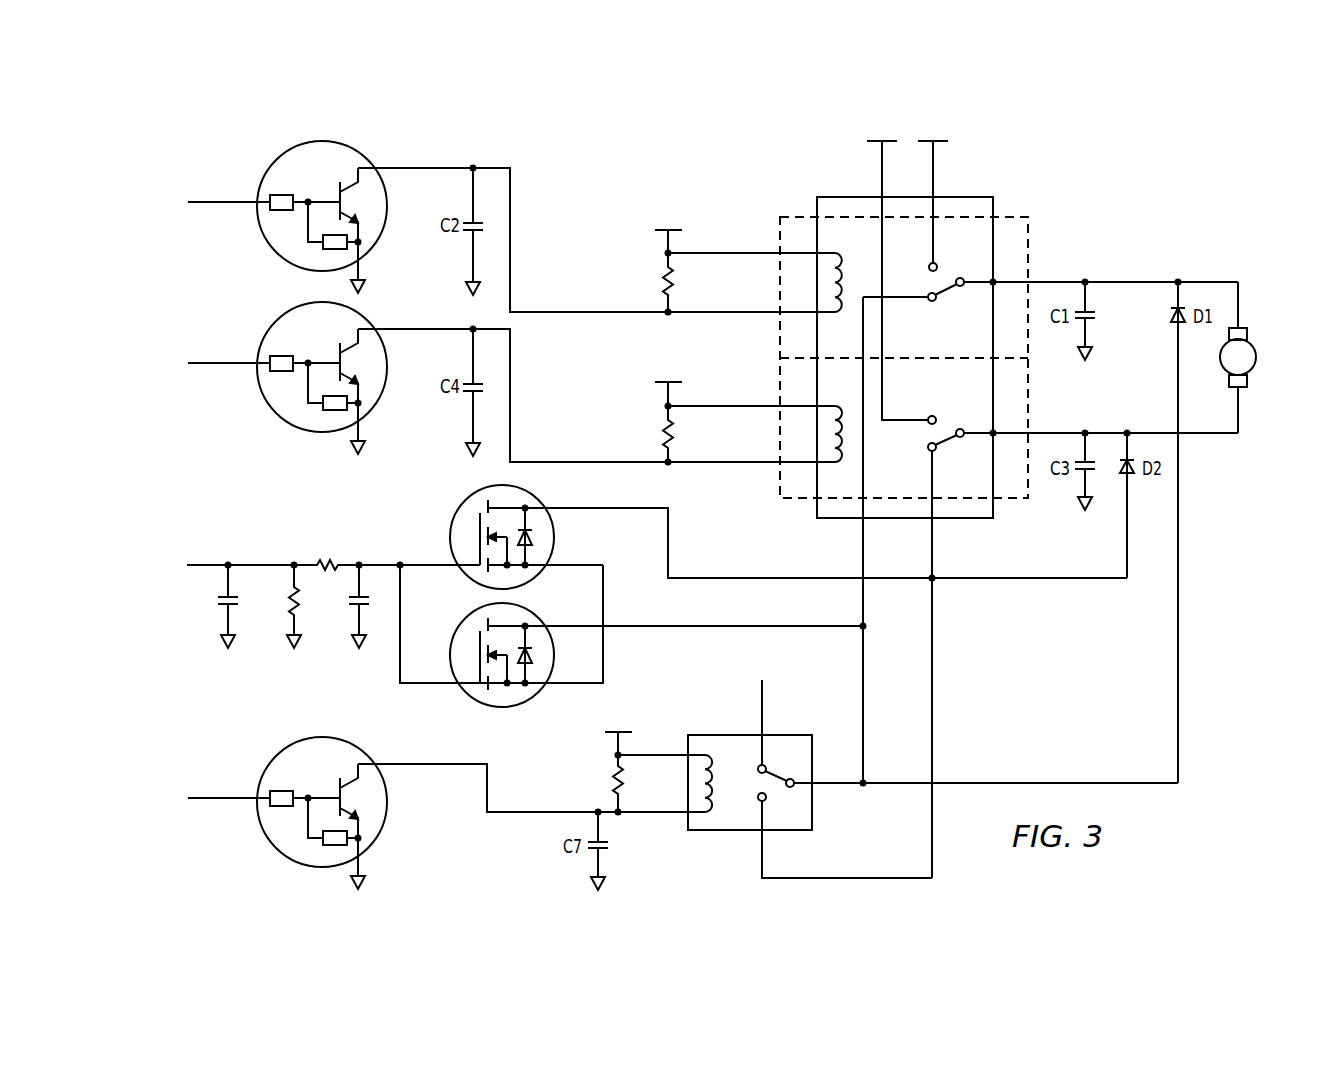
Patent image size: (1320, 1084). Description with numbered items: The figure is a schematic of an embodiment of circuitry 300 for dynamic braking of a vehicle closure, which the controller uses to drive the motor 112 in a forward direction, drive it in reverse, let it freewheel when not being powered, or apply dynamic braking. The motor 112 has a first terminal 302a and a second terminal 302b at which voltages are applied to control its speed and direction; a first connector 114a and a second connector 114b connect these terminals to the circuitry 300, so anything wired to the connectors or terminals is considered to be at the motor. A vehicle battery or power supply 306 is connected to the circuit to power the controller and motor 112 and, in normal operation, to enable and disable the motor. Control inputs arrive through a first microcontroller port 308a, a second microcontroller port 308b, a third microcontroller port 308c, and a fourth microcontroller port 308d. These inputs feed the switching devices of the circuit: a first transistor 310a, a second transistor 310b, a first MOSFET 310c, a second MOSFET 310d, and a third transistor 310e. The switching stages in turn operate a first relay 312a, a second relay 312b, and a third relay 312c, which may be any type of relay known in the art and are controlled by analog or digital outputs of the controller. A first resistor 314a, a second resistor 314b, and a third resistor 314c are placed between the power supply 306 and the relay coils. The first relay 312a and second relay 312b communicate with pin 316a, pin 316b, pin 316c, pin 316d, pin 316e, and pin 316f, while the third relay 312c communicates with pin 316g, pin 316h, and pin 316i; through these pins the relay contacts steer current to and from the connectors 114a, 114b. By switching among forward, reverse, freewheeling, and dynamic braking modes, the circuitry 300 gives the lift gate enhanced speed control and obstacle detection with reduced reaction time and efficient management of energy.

The circuitry 300 is at (1226, 761).
The motor 112 is at (1256, 357).
The first connector 114a is at (1238, 298).
The second connector 114b is at (1238, 412).
The first terminal 302a is at (1248, 334).
The second terminal 302b is at (1248, 381).
The power supply 306 is at (648, 218).
The first microcontroller port 308a is at (222, 201).
The second microcontroller port 308b is at (222, 362).
The third microcontroller port 308c is at (262, 565).
The fourth microcontroller port 308d is at (218, 800).
The first transistor 310a is at (256, 160).
The second transistor 310b is at (258, 320).
The first MOSFET 310c is at (442, 511).
The second MOSFET 310d is at (460, 708).
The third transistor 310e is at (258, 850).
The first relay 312a is at (780, 340).
The second relay 312b is at (780, 376).
The third relay 312c is at (712, 832).
The first resistor 314a is at (663, 280).
The second resistor 314b is at (663, 430).
The third resistor 314c is at (612, 780).
The pin 316a is at (1012, 281).
The pin 316b is at (1028, 432).
The pin 316c is at (934, 548).
The pin 316d is at (862, 548).
The pin 316e is at (934, 168).
The pin 316f is at (881, 168).
The pin 316g is at (831, 788).
The pin 316h is at (764, 843).
The pin 316i is at (763, 718).